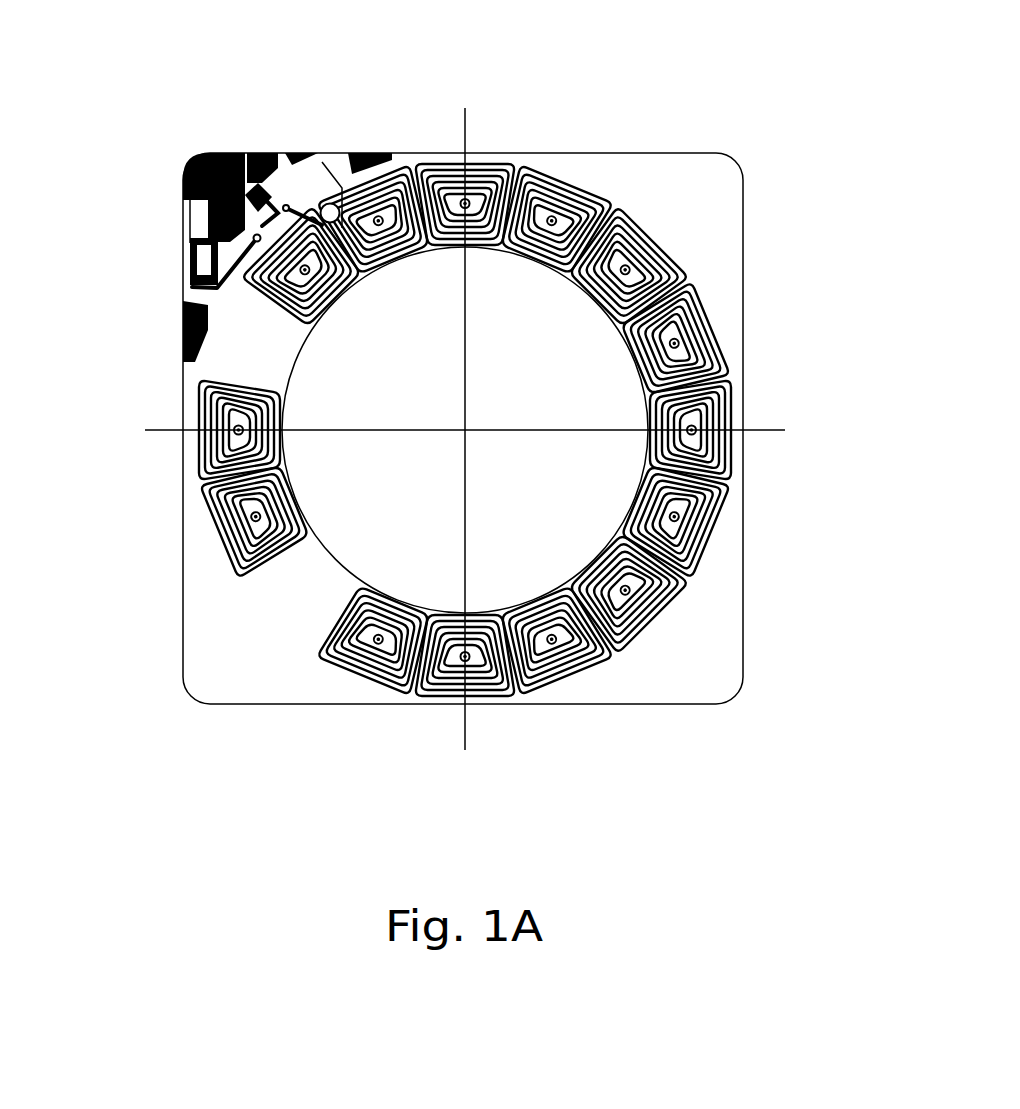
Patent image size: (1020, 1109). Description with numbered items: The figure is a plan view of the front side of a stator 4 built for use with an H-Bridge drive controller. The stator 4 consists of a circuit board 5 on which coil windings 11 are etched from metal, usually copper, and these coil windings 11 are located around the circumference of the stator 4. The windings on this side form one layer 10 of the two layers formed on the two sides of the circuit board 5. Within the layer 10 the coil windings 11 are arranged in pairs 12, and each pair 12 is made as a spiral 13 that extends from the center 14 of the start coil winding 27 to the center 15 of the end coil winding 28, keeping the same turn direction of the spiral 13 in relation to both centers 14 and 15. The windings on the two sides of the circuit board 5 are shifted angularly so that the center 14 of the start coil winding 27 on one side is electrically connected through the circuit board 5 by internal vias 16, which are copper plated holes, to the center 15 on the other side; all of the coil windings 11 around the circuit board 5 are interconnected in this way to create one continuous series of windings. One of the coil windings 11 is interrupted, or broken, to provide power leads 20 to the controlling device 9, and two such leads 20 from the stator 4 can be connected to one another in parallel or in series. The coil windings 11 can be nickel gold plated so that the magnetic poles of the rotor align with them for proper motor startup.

The stator 4 is at (702, 107).
The circuit board 5 is at (715, 260).
The controlling device 9 is at (245, 197).
The layer 10 is at (712, 350).
The coil windings 11 is at (670, 245).
The pair 12 is at (672, 545).
The spiral 13 is at (683, 572).
The center 14 is at (212, 530).
The center 15 is at (233, 430).
The internal vias 16 is at (247, 517).
The power leads 20 is at (283, 238).
The start coil winding 27 is at (727, 498).
The end coil winding 28 is at (638, 605).